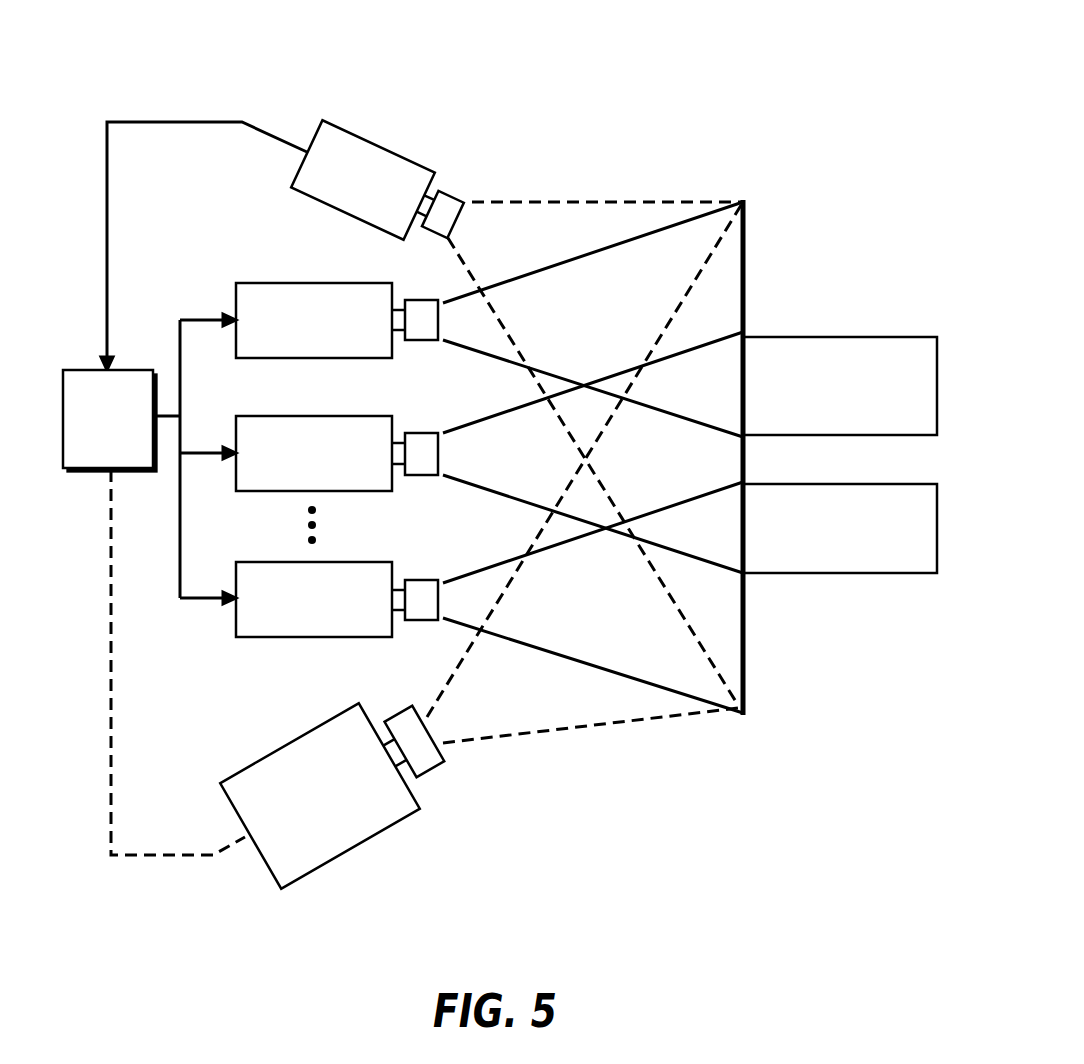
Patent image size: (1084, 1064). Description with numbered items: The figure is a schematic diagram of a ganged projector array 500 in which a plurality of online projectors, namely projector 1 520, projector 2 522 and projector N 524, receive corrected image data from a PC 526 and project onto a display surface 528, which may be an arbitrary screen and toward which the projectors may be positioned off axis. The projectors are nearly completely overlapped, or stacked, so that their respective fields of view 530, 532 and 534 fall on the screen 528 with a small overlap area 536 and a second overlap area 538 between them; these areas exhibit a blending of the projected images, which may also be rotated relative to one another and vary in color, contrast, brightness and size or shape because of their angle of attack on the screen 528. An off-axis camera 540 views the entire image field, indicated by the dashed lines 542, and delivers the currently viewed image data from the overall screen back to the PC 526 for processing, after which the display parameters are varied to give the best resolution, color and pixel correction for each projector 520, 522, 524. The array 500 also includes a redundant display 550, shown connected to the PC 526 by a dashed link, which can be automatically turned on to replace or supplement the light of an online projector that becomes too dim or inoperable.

The ganged projector array 500 is at (734, 97).
The projector 1 520 is at (298, 346).
The projector 2 522 is at (298, 479).
The projector N 524 is at (298, 625).
The PC 526 is at (92, 443).
The display surface 528 is at (722, 278).
The field of view of projector 1 530 is at (730, 262).
The field of view of projector 2 532 is at (731, 468).
The field of view of projector N 534 is at (737, 622).
The overlap area 536 is at (826, 402).
The overlap area 538 is at (826, 547).
The off-axis camera 540 is at (380, 188).
The camera field of view 542 is at (553, 195).
The redundant display 550 is at (481, 545).